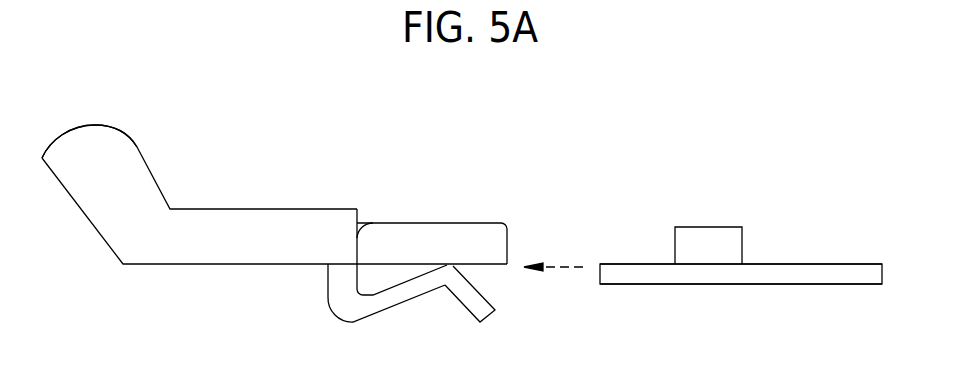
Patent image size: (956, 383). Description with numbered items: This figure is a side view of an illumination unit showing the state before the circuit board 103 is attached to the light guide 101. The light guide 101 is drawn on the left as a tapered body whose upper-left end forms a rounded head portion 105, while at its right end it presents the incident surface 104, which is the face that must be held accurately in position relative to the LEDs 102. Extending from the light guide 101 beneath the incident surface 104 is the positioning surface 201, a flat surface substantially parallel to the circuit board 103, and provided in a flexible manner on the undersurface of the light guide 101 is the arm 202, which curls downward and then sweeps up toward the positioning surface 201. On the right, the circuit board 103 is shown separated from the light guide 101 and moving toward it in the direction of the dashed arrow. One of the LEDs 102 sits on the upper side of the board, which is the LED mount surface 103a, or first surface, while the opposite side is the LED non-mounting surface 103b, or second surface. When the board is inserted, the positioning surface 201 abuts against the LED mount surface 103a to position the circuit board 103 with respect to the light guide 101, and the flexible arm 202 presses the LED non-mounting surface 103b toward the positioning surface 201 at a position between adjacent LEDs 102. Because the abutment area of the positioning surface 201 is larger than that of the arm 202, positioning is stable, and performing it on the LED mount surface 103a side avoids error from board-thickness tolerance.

The light guide 101 is at (175, 233).
The housing head portion 105 is at (72, 130).
The incident surface 104 is at (368, 228).
The arm 202 is at (400, 292).
The positioning surface 201 is at (475, 267).
The LED 102 is at (705, 245).
The circuit board 103 is at (852, 277).
The LED mount surface 103a is at (842, 262).
The LED non-mounting surface 103b is at (862, 287).